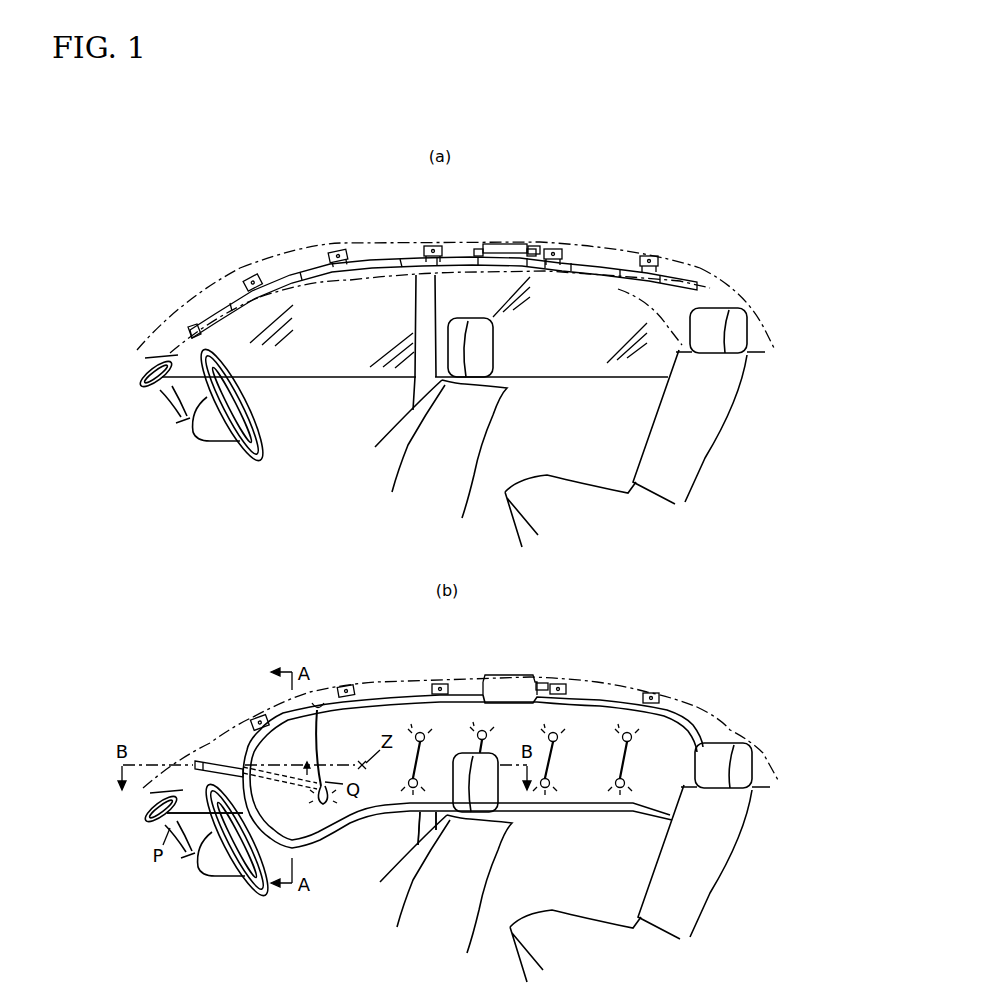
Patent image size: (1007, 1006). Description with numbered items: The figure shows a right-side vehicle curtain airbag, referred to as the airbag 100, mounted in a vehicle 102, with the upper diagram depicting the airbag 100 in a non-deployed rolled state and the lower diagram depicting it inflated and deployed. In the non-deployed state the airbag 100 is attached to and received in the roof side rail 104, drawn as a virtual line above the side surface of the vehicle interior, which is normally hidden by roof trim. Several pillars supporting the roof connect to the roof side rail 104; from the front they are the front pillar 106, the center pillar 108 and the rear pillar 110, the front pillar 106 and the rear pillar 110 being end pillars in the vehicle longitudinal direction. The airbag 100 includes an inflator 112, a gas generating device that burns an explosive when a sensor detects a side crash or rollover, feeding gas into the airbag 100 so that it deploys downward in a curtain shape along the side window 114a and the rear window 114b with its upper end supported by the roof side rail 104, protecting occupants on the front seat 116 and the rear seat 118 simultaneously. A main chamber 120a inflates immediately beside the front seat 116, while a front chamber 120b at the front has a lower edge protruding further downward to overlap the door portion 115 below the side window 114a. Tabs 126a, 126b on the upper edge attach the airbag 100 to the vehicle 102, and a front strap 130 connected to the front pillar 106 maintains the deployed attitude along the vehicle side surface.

The airbag 100 is at (619, 262).
The vehicle 102 is at (229, 285).
The roof side rail 104 is at (393, 252).
The front pillar 106 is at (207, 307).
The center pillar 108 is at (458, 297).
The rear pillar 110 is at (733, 290).
The inflator 112 is at (532, 243).
The side window 114a is at (317, 302).
The rear side window 114b is at (577, 290).
The door portion 115 is at (333, 862).
The front seat 116 is at (487, 418).
The rear seat 118 is at (713, 420).
The main chamber 120a is at (380, 814).
The front chamber 120b is at (317, 708).
The tab 126a is at (338, 250).
The tab 126b is at (256, 276).
The front strap 130 is at (192, 327).